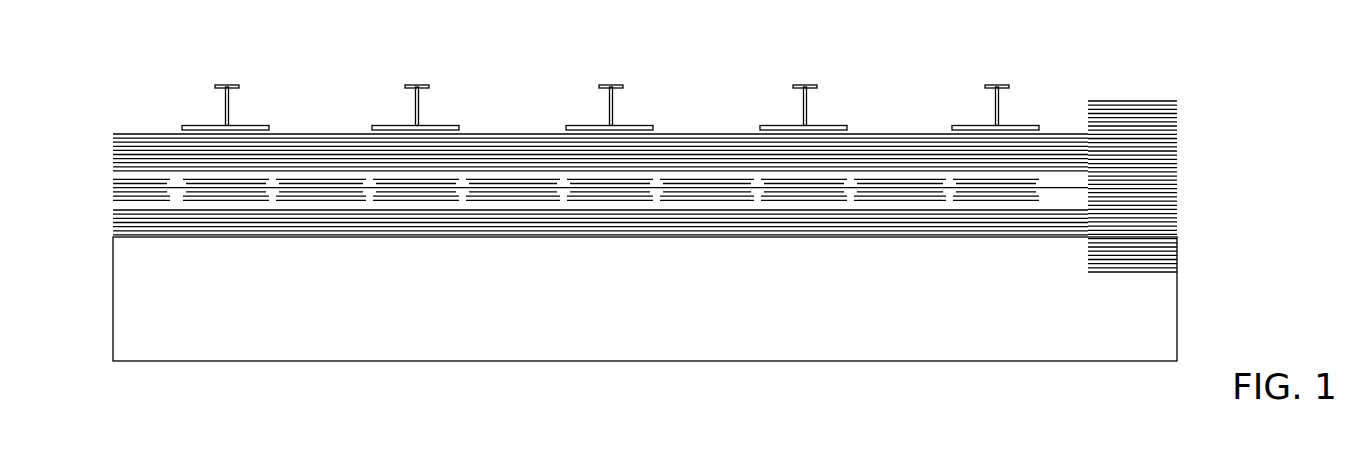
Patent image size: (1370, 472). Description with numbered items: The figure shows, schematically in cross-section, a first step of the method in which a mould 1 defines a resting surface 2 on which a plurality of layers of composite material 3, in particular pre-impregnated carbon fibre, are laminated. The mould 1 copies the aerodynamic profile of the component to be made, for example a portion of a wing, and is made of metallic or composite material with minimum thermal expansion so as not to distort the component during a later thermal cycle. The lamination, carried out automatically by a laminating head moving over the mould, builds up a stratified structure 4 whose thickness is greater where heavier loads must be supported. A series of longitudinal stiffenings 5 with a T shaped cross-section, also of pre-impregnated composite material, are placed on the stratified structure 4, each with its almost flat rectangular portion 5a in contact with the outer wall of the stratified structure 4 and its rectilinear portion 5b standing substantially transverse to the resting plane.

The mould 1 is at (128, 283).
The resting surface 2 is at (136, 233).
The layers of composite material 3 is at (521, 157).
The stratified structure 4 is at (643, 168).
The longitudinal stiffenings 5 is at (598, 80).
The flat rectangular portion 5a is at (197, 122).
The rectilinear portion 5b is at (234, 102).